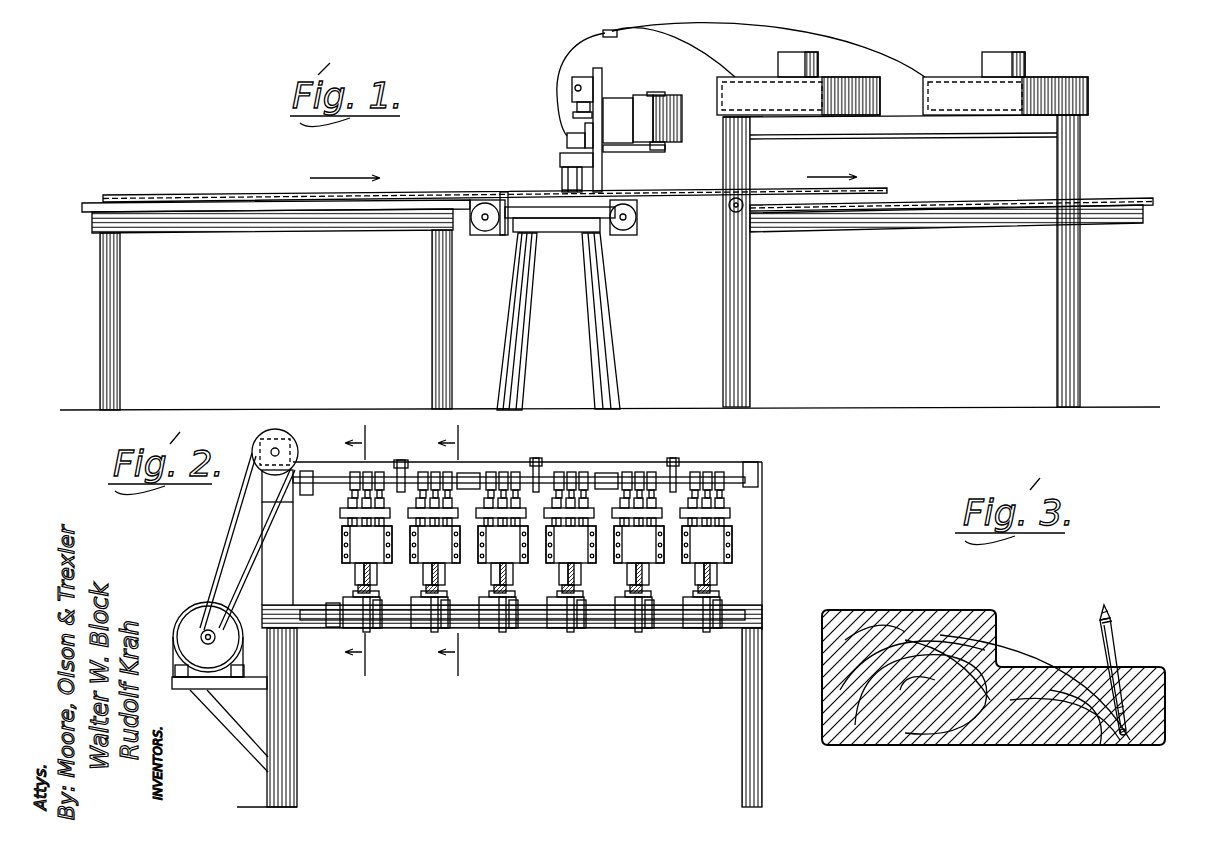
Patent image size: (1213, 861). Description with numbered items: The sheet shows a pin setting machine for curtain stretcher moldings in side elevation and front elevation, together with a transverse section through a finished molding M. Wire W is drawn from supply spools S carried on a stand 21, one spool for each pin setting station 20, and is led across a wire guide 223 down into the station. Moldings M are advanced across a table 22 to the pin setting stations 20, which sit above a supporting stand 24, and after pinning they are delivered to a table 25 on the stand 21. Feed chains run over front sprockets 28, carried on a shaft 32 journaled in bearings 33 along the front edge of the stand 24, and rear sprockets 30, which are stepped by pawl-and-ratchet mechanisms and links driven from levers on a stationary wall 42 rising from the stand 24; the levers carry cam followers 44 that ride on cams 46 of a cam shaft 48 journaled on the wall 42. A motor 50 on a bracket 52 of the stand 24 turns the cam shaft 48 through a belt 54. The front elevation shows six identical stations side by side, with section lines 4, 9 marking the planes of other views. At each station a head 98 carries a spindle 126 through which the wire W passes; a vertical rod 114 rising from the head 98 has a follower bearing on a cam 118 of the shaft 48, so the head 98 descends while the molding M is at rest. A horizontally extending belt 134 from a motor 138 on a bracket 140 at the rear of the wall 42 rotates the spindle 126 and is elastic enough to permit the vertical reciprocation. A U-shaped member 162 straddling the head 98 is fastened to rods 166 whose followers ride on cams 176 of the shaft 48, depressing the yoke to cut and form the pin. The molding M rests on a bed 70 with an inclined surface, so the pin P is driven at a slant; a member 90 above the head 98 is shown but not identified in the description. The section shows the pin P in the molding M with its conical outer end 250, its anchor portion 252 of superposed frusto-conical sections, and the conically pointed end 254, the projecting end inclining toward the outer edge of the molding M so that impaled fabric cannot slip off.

In FIG. 1, the pin setting station 20 is at (548, 189).
In FIG. 2, the pin setting station 20 is at (731, 593).
In FIG. 1, the stand 21 is at (1075, 156).
In FIG. 1, the table 22 is at (271, 232).
In FIG. 1, the supporting stand 24 is at (555, 234).
In FIG. 2, the supporting stand 24 is at (306, 622).
In FIG. 1, the table 25 is at (950, 222).
In FIG. 1, the sprockets 28 is at (470, 227).
In FIG. 2, the sprockets 28 is at (574, 630).
In FIG. 1, the sprockets 30 is at (641, 227).
In FIG. 2, the shaft 32 is at (410, 616).
In FIG. 2, the bearings 33 is at (506, 630).
In FIG. 1, the stationary wall 42 is at (597, 84).
In FIG. 2, the stationary wall 42 is at (312, 559).
In FIG. 2, the cam followers 44 is at (606, 462).
In FIG. 2, the cams 46 is at (548, 480).
In FIG. 2, the cam shaft 48 is at (327, 477).
In FIG. 2, the motor 50 is at (196, 603).
In FIG. 2, the bracket 52 is at (218, 690).
In FIG. 2, the belt 54 is at (230, 520).
In FIG. 2, the bed 70 is at (724, 600).
In FIG. 1, the slide block 90 is at (567, 136).
In FIG. 1, the head 98 is at (560, 157).
In FIG. 2, the head 98 is at (716, 549).
In FIG. 2, the vertical rod 114 is at (732, 534).
In FIG. 2, the cam 118 is at (432, 474).
In FIG. 1, the spindle 126 is at (562, 176).
In FIG. 2, the spindle 126 is at (714, 574).
In FIG. 1, the belt 134 is at (619, 153).
In FIG. 1, the motor 138 is at (641, 94).
In FIG. 1, the bracket 140 is at (634, 131).
In FIG. 2, the U-shaped member 162 is at (735, 510).
In FIG. 2, the rods 166 is at (735, 492).
In FIG. 2, the cams 176 is at (414, 475).
In FIG. 1, the wire guide 223 is at (565, 50).
In FIG. 3, the outer end of pin 250 is at (1106, 611).
In FIG. 3, the anchor portion 252 is at (1118, 716).
In FIG. 3, the conically pointed end 254 is at (1125, 740).
In FIG. 2, the section line 4 is at (458, 550).
In FIG. 2, the section line 9 is at (365, 550).
In FIG. 1, the molding M is at (180, 195).
In FIG. 2, the molding M is at (350, 594).
In FIG. 3, the molding M is at (866, 622).
In FIG. 1, the wire W is at (556, 106).
In FIG. 1, the supply spools S is at (857, 104).
In FIG. 3, the pin P is at (1113, 638).